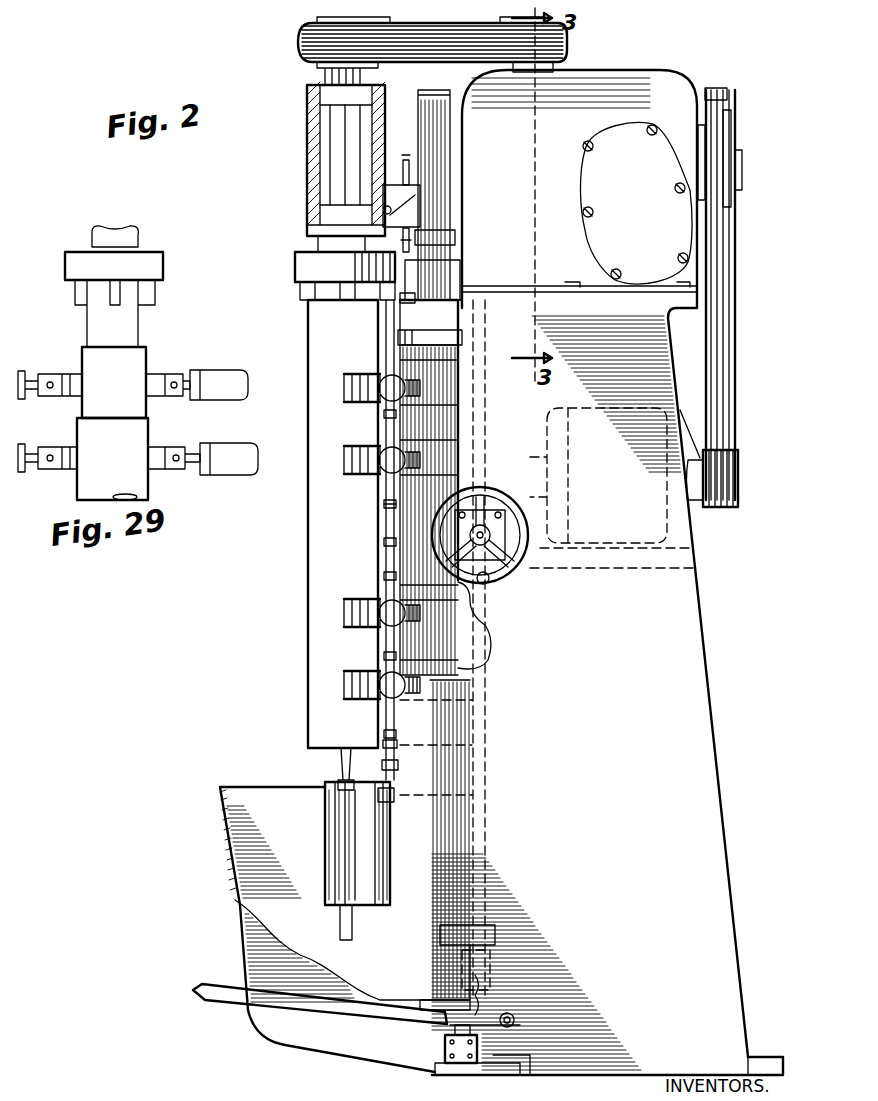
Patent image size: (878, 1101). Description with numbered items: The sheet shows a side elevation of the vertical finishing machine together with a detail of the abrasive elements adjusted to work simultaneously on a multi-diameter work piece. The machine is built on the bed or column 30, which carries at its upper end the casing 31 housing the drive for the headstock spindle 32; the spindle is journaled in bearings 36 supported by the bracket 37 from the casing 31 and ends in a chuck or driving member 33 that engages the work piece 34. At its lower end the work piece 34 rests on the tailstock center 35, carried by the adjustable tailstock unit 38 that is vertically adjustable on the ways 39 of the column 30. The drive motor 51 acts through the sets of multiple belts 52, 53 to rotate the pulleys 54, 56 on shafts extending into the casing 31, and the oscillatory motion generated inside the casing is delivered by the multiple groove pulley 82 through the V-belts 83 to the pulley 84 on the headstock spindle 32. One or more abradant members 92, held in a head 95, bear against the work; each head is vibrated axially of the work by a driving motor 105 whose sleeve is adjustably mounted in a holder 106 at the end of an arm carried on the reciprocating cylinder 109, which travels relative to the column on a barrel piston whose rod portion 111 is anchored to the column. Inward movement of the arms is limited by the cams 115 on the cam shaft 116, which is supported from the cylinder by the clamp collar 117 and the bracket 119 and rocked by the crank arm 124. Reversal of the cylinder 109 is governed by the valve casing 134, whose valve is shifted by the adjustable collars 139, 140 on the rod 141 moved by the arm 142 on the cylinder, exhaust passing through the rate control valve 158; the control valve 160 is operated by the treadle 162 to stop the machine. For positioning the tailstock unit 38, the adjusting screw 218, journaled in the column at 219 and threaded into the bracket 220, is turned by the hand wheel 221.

In FIG. 2, the bed or column 30 is at (695, 695).
In FIG. 2, the casing 31 is at (655, 80).
In FIG. 2, the headstock spindle 32 is at (335, 170).
In FIG. 2, the chuck or driving member 33 is at (310, 262).
In FIG. 29, the chuck or driving member 33 is at (150, 265).
In FIG. 2, the work piece 34 is at (330, 338).
In FIG. 29, the work piece 34 is at (135, 358).
In FIG. 2, the tailstock center 35 is at (338, 756).
In FIG. 2, the bearings 36 is at (320, 217).
In FIG. 2, the bracket 37 is at (307, 130).
In FIG. 2, the adjustable tailstock unit 38 is at (325, 810).
In FIG. 2, the ways 39 is at (395, 838).
In FIG. 2, the drive motor 51 is at (706, 502).
In FIG. 2, the set of multiple belts 52 is at (728, 322).
In FIG. 2, the set of multiple belts 53 is at (712, 90).
In FIG. 2, the pulley 54 is at (742, 170).
In FIG. 2, the pulley 56 is at (730, 112).
In FIG. 2, the multiple groove pulley 82 is at (508, 24).
In FIG. 2, the V-belts 83 is at (452, 48).
In FIG. 2, the pulley 84 is at (378, 66).
In FIG. 29, the abradant member 92 is at (80, 396).
In FIG. 29, the head 95 is at (152, 394).
In FIG. 2, the driving motor 105 is at (388, 402).
In FIG. 29, the driving motor 105 is at (222, 447).
In FIG. 29, the holder 106 is at (172, 448).
In FIG. 2, the reciprocating cylinder 109 is at (452, 305).
In FIG. 2, the rod portion 111 is at (458, 300).
In FIG. 2, the cam 115 is at (384, 652).
In FIG. 2, the cam shaft 116 is at (386, 528).
In FIG. 2, the clamp collar 117 is at (380, 795).
In FIG. 2, the bracket 119 is at (405, 324).
In FIG. 2, the crank arm 124 is at (385, 758).
In FIG. 2, the valve casing 134 is at (455, 205).
In FIG. 2, the adjustable collar 139 is at (406, 162).
In FIG. 2, the adjustable collar 140 is at (402, 245).
In FIG. 2, the rod 141 is at (440, 268).
In FIG. 2, the arm 142 is at (412, 302).
In FIG. 2, the rate control valve 158 is at (420, 200).
In FIG. 2, the control valve 160 is at (460, 1063).
In FIG. 2, the treadle 162 is at (278, 982).
In FIG. 2, the adjusting screw 218 is at (490, 662).
In FIG. 2, the journal 219 is at (490, 960).
In FIG. 2, the bracket 220 is at (490, 922).
In FIG. 2, the hand wheel 221 is at (488, 492).